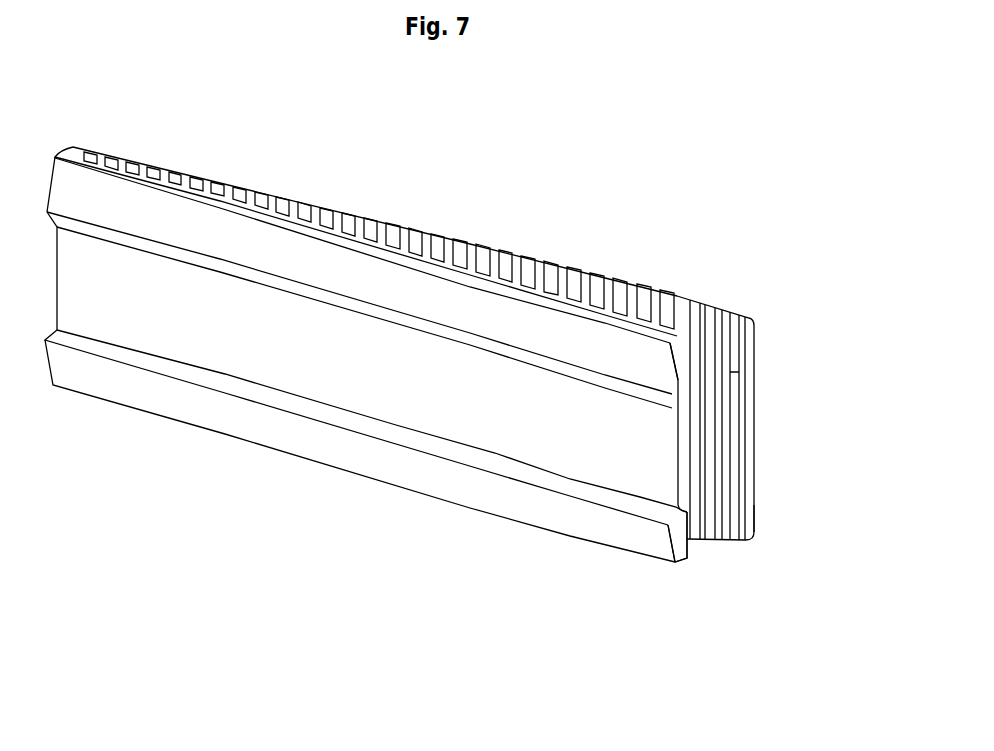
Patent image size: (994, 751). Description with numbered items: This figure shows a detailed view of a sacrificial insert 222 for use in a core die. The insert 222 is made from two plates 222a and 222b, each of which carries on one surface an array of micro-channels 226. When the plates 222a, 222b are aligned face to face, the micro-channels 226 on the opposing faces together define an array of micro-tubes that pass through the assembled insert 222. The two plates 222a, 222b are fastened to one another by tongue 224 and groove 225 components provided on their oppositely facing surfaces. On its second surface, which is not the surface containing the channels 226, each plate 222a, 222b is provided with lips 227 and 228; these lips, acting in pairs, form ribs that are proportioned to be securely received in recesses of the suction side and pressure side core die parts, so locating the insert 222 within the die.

The sacrificial insert 222 is at (474, 369).
The plate 222a is at (362, 221).
The plate 222b is at (271, 197).
The tongue 224 is at (711, 377).
The groove 225 is at (673, 337).
The micro-channels 226 is at (650, 324).
The lip 227 is at (756, 351).
The lip 228 is at (755, 515).